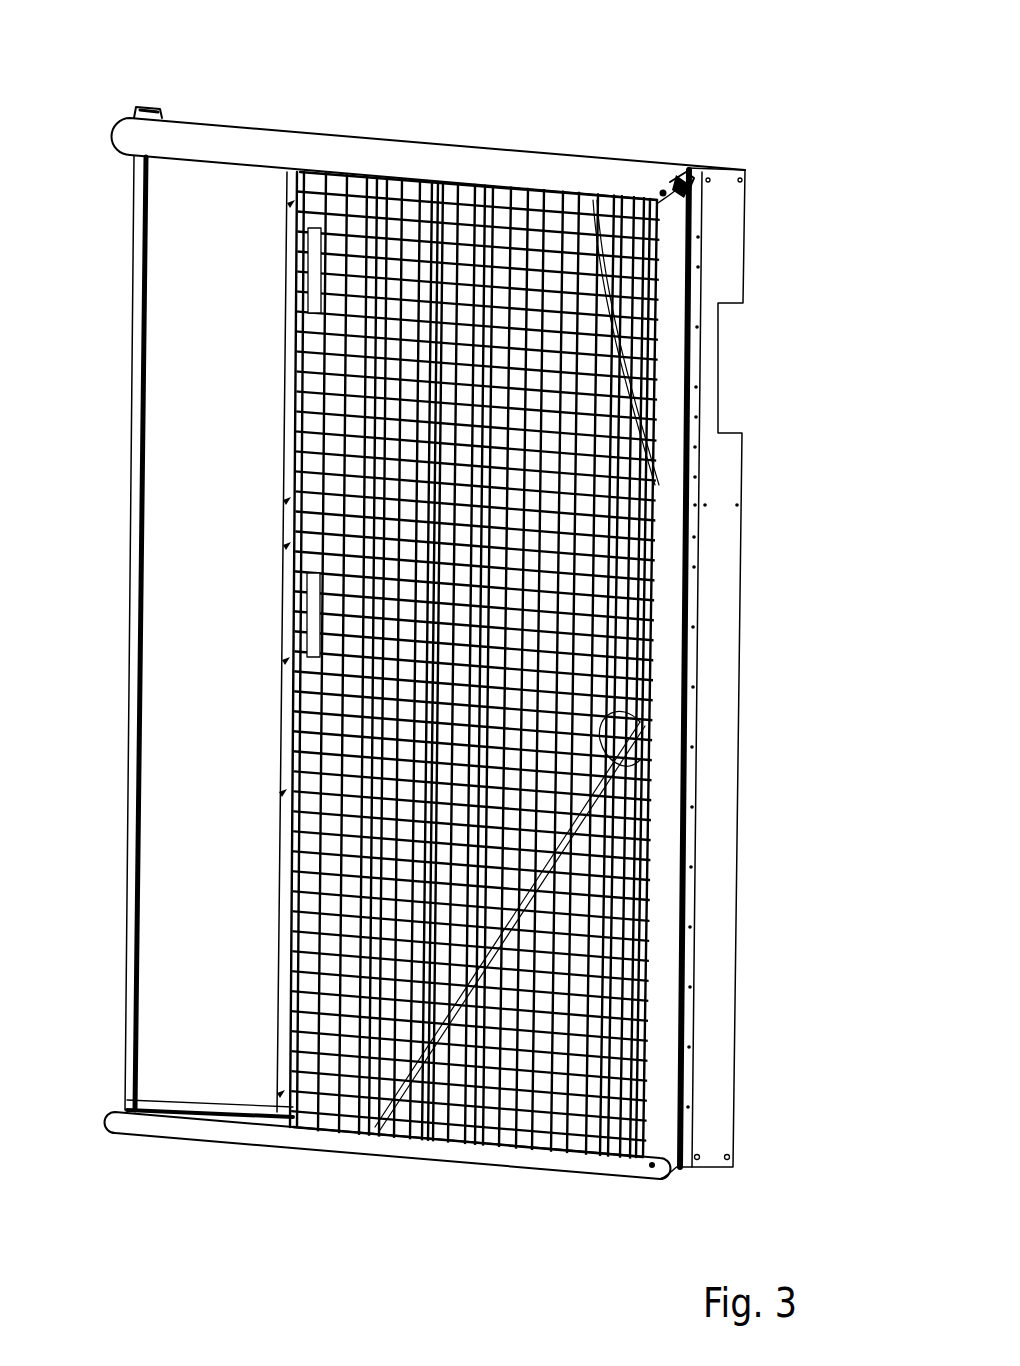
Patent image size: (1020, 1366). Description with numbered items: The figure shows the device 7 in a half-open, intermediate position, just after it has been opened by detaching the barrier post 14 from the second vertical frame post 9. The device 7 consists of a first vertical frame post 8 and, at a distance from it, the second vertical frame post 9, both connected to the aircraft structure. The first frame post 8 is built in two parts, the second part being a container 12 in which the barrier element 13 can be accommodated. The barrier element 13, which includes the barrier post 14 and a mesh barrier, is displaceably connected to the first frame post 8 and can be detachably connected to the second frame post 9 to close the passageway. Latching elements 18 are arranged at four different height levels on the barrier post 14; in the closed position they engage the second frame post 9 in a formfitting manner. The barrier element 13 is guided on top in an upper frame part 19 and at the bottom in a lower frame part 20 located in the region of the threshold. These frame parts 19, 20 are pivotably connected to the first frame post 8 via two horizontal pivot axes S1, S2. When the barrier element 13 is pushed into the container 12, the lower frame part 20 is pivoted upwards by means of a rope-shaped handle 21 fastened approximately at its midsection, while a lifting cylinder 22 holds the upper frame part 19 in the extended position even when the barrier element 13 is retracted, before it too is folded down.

The device 7 is at (750, 140).
The first vertical frame post 8 is at (680, 182).
The second vertical frame post 9 is at (132, 108).
The container 12 is at (673, 575).
The barrier element 13 is at (452, 237).
The barrier post 14 is at (287, 615).
The latching elements 18 is at (287, 203).
The upper frame part 19 is at (292, 143).
The lower frame part 20 is at (312, 1143).
The rope-shaped handle 21 is at (647, 802).
The lifting cylinder 22 is at (655, 356).
The pivot axis S1 is at (663, 192).
The pivot axis S2 is at (652, 1165).